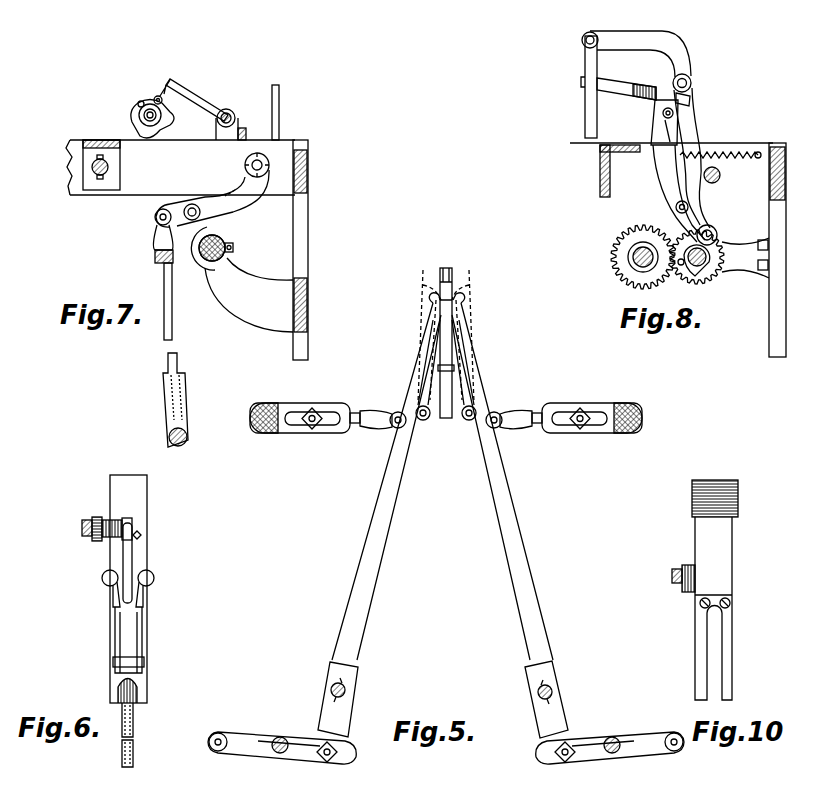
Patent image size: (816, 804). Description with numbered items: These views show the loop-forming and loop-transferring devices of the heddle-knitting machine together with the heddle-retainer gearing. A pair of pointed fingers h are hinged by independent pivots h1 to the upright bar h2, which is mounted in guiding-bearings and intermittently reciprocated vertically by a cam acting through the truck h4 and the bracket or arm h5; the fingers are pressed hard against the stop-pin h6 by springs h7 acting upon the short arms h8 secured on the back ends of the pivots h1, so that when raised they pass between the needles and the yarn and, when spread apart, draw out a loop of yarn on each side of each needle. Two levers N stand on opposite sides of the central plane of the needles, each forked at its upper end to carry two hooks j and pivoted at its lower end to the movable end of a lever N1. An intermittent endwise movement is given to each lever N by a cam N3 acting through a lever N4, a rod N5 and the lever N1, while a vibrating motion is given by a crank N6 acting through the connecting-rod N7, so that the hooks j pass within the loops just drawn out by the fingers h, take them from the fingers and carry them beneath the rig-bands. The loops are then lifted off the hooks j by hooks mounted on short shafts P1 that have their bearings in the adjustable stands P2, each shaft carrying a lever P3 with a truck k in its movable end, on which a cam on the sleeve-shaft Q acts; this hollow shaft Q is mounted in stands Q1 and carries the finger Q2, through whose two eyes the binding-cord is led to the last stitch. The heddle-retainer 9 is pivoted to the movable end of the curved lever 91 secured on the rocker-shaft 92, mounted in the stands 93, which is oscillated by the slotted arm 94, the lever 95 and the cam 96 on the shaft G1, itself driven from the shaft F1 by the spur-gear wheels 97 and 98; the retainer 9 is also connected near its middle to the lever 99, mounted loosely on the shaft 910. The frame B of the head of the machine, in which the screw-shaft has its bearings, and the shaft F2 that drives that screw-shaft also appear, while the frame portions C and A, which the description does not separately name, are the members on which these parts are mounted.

In FIG. 7, the frame C is at (180, 167).
In FIG. 8, the frame C is at (671, 170).
In FIG. 7, the upright bar A is at (300, 250).
In FIG. 8, the frame B is at (754, 250).
In FIG. 7, the short shaft P1 is at (229, 110).
In FIG. 7, the adjustable stand P2 is at (120, 120).
In FIG. 7, the lever P3 is at (197, 97).
In FIG. 7, the hollow sleeve-shaft Q is at (138, 104).
In FIG. 7, the stand Q1 is at (170, 128).
In FIG. 7, the finger Q2 is at (161, 116).
In FIG. 7, the truck k is at (155, 98).
In FIG. 5, the truck k is at (451, 370).
In FIG. 5, the lever N is at (443, 520).
In FIG. 5, the lever N1 is at (446, 748).
In FIG. 7, the cam N3 is at (208, 245).
In FIG. 7, the lever N4 is at (212, 190).
In FIG. 7, the rod N5 is at (172, 300).
In FIG. 5, the crank N6 is at (446, 409).
In FIG. 5, the connecting-rod N7 is at (446, 410).
In FIG. 7, the shaft G1 is at (234, 245).
In FIG. 8, the shaft G1 is at (688, 248).
In FIG. 8, the shaft F1 is at (628, 257).
In FIG. 8, the shaft F2 is at (720, 176).
In FIG. 8, the heddle-eye retainer 9 is at (585, 62).
In FIG. 10, the heddle-eye retainer 9 is at (715, 590).
In FIG. 8, the curved lever 91 is at (636, 54).
In FIG. 8, the rocker-shaft 92 is at (691, 83).
In FIG. 8, the stand 93 is at (696, 116).
In FIG. 8, the slotted arm 94 is at (655, 123).
In FIG. 8, the lever 95 is at (679, 193).
In FIG. 8, the cam 96 is at (695, 276).
In FIG. 8, the spur-gear wheel 97 is at (712, 275).
In FIG. 8, the spur-gear wheel 98 is at (632, 275).
In FIG. 8, the lever 99 is at (626, 86).
In FIG. 10, the lever 99 is at (690, 568).
In FIG. 8, the shaft 910 is at (692, 100).
In FIG. 5, the hook j is at (445, 322).
In FIG. 5, the pointed finger h is at (446, 362).
In FIG. 5, the pivot h1 is at (446, 424).
In FIG. 6, the upright bar h2 is at (107, 518).
In FIG. 6, the truck h4 is at (128, 589).
In FIG. 6, the bracket or arm h5 is at (143, 535).
In FIG. 6, the stop-pin h6 is at (110, 596).
In FIG. 6, the spring h7 is at (128, 687).
In FIG. 6, the short arm h8 is at (148, 596).